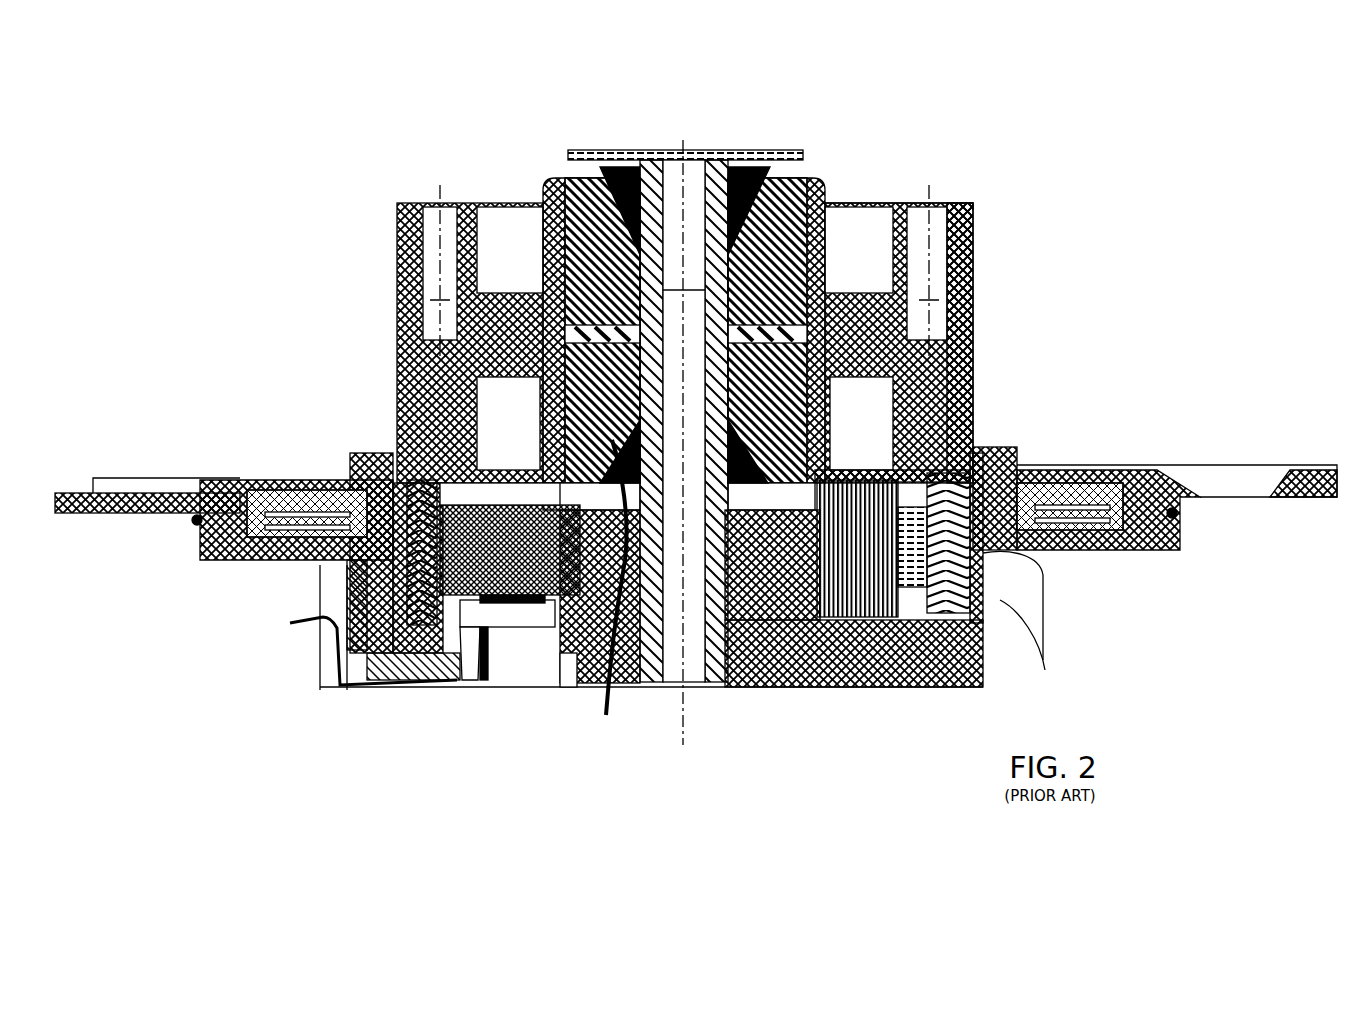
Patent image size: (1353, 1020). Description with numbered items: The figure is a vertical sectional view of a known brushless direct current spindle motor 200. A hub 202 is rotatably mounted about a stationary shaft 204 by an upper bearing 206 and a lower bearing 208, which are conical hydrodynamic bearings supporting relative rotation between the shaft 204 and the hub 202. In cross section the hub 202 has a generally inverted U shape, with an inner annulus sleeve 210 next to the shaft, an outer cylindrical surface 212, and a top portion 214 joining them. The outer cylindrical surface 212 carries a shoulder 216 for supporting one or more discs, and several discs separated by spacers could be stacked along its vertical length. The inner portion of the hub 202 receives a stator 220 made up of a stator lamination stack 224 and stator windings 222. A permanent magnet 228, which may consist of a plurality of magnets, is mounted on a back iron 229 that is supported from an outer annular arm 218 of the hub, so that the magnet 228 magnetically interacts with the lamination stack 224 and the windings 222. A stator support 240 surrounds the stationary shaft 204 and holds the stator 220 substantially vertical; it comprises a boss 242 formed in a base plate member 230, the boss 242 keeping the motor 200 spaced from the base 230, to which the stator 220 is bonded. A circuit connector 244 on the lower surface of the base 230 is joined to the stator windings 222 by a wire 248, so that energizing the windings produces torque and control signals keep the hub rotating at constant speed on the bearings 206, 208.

The brushless direct current motor 200 is at (1205, 125).
The hub 202 is at (1003, 268).
The stationary shaft 204 is at (708, 150).
The upper bearing 206 is at (600, 178).
The lower bearing 208 is at (631, 589).
The inner annulus sleeve 210 is at (828, 242).
The outer cylindrical surface 212 is at (975, 380).
The top portion 214 is at (950, 200).
The shoulder 216 is at (1000, 450).
The outer annular arm 218 is at (385, 452).
The stator 220 is at (880, 620).
The stator windings 222 is at (838, 620).
The stator lamination stack 224 is at (905, 557).
The permanent magnet 228 is at (1035, 478).
The back iron 229 is at (838, 547).
The base plate member 230 is at (1013, 667).
The stator support 240 is at (395, 418).
The boss 242 is at (340, 560).
The circuit connector 244 is at (555, 690).
The wire 248 is at (455, 690).